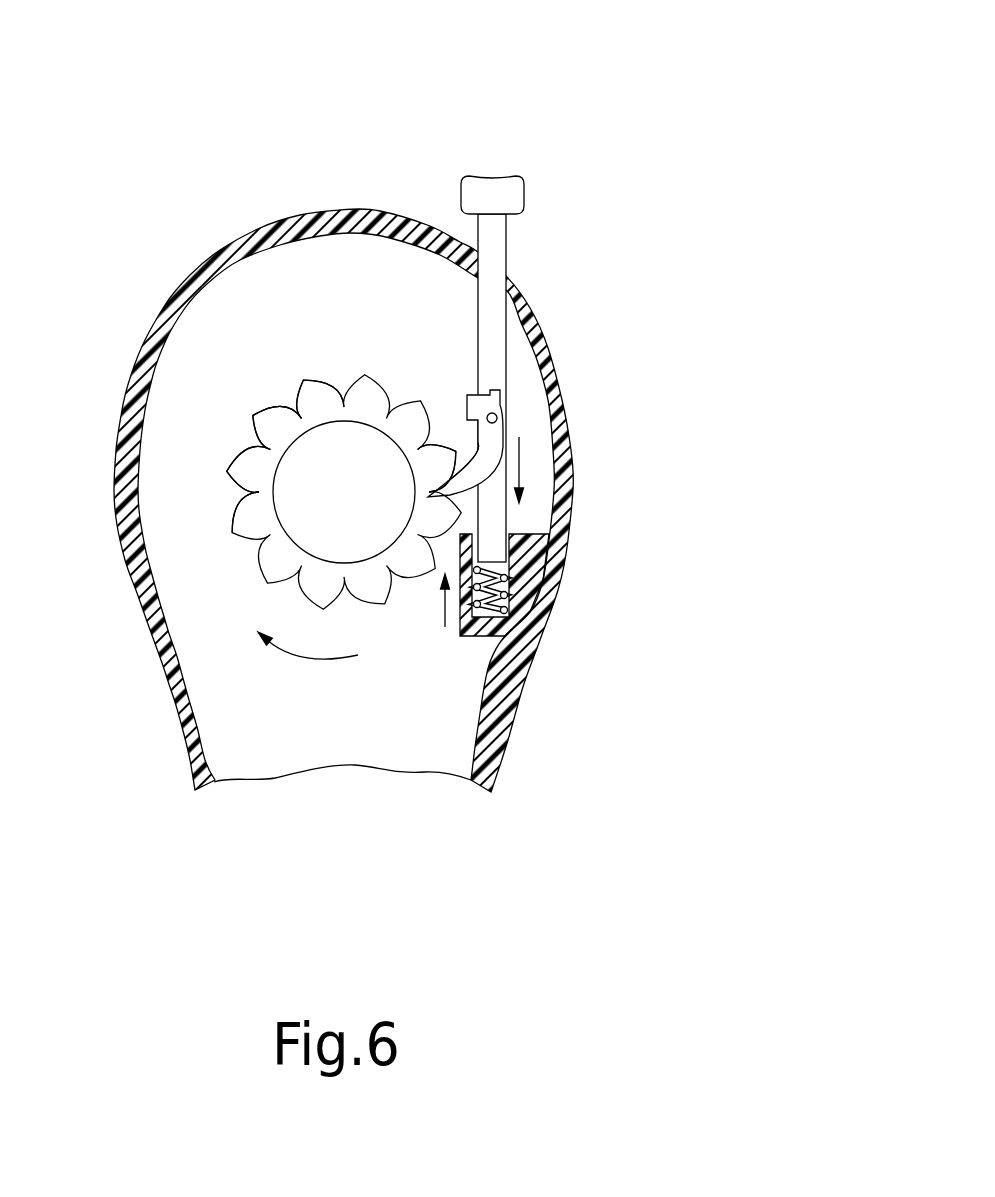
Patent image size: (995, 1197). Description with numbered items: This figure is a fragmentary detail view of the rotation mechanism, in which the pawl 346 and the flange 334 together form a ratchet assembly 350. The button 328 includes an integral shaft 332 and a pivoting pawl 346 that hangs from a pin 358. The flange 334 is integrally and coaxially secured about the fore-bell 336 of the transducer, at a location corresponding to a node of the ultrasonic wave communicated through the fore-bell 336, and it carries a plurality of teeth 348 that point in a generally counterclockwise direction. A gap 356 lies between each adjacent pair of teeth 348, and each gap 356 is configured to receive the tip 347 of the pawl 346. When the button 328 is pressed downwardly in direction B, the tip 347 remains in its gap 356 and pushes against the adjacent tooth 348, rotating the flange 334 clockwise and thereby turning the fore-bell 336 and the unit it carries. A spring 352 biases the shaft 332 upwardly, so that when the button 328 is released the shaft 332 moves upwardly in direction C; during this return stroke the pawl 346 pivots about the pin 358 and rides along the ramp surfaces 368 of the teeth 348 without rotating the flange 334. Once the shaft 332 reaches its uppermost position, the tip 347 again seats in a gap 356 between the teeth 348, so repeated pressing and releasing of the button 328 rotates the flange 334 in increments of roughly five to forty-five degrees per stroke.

The ratchet assembly 350 is at (340, 415).
The button 328 is at (544, 171).
The shaft 332 is at (496, 262).
The spring 352 is at (483, 644).
The pivoting pawl 346 is at (465, 425).
The pin 358 is at (498, 419).
The ramp surfaces 368 is at (462, 434).
The flange 334 is at (252, 515).
The fore-bell 336 is at (372, 506).
The tip 347 is at (430, 492).
The gap 356 is at (342, 375).
The teeth 348 is at (239, 411).
The direction B is at (521, 446).
The direction C is at (445, 627).